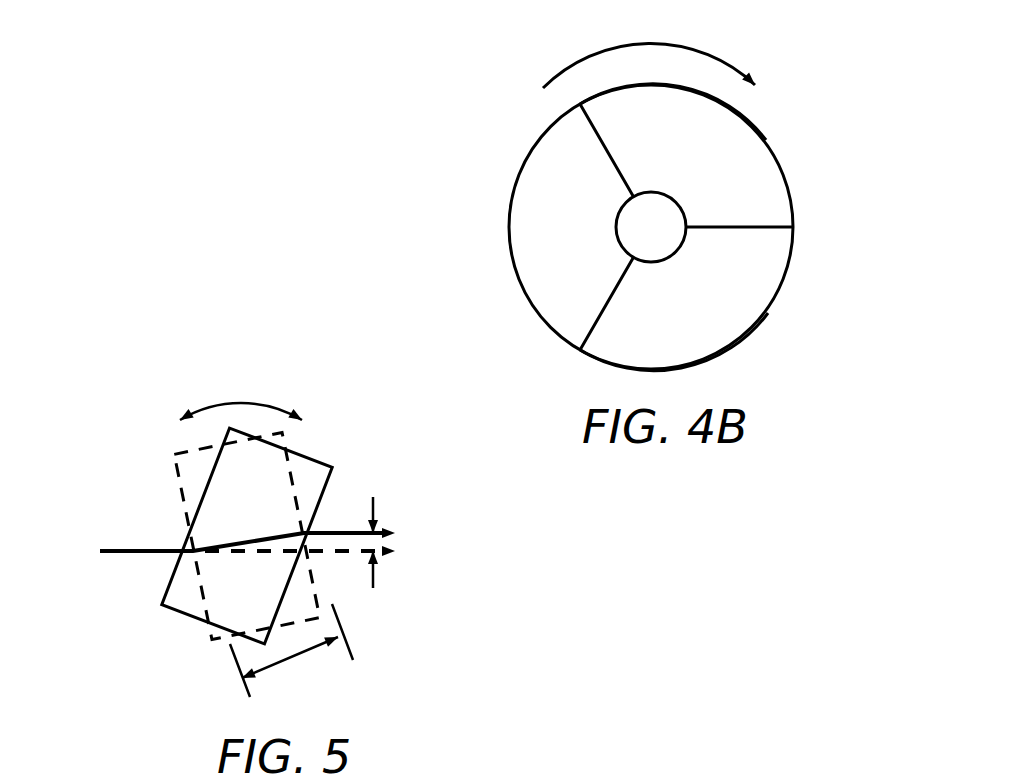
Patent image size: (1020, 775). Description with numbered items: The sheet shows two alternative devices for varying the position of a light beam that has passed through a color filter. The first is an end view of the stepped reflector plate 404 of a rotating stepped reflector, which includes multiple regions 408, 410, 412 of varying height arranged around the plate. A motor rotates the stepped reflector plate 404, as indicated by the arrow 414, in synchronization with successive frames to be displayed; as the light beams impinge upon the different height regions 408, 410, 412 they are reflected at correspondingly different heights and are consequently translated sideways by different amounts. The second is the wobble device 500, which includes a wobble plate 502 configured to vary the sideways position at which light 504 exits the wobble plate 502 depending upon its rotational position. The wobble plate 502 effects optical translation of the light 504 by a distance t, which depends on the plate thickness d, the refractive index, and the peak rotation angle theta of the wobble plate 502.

In FIG. 4B, the stepped reflector plate 404 is at (467, 93).
In FIG. 4B, the region of varying height 408 is at (513, 183).
In FIG. 4B, the region of varying height 410 is at (765, 140).
In FIG. 4B, the region of varying height 412 is at (768, 313).
In FIG. 4B, the arrow 414 is at (647, 43).
In FIG. 5, the wobble device 500 is at (127, 382).
In FIG. 5, the wobble plate 502 is at (172, 503).
In FIG. 5, the light 504 is at (140, 551).